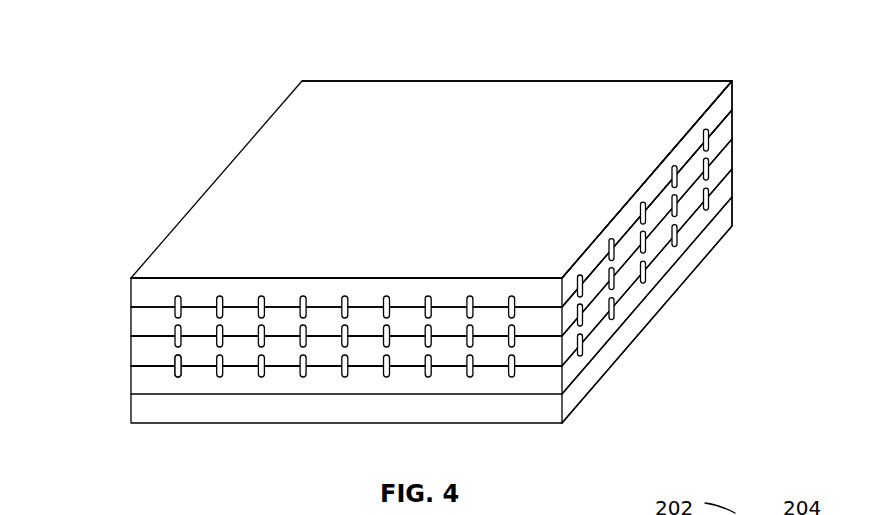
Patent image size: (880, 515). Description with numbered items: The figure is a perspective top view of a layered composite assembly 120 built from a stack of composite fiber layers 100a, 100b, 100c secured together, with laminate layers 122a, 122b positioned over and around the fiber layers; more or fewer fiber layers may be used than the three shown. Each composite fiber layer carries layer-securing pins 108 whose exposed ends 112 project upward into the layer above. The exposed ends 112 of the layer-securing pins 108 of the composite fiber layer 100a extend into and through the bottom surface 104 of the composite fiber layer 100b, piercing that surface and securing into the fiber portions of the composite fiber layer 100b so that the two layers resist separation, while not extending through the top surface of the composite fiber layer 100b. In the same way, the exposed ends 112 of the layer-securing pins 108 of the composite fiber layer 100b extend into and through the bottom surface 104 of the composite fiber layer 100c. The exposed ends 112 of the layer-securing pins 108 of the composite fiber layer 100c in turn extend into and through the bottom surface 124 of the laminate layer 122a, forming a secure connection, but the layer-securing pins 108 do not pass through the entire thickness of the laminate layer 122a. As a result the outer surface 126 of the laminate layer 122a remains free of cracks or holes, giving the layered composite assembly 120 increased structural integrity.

The layered composite assembly 120 is at (408, 246).
The outer surface 126 is at (342, 112).
The laminate layer 122a is at (625, 115).
The laminate layer 122b is at (578, 385).
The bottom surface 124 is at (548, 292).
The bottom surface 104 is at (237, 355).
The layer-securing pins 108 is at (184, 372).
The exposed ends 112 is at (220, 331).
The composite fiber layer 100a is at (138, 382).
The composite fiber layer 100b is at (138, 352).
The composite fiber layer 100c is at (138, 320).